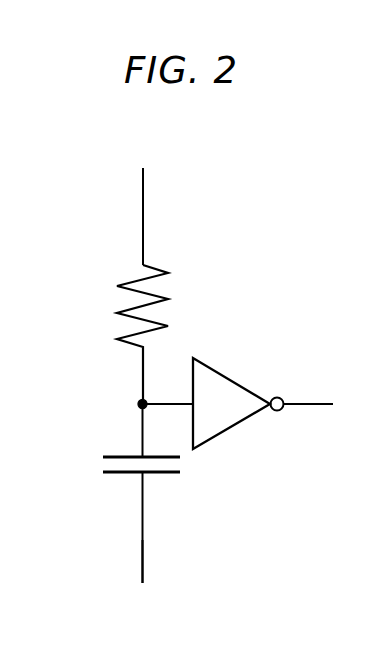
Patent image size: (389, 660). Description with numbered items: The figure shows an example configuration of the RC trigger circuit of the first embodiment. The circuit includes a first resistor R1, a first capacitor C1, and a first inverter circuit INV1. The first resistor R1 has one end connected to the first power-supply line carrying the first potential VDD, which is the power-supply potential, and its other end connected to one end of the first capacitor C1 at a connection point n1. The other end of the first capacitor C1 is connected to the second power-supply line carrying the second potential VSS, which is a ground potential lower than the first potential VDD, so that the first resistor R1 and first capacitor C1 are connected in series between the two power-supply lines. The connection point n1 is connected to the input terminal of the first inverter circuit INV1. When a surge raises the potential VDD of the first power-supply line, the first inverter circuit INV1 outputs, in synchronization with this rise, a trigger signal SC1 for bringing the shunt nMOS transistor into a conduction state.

The first potential VDD is at (115, 193).
The first resistor R1 is at (109, 334).
The connection point n1 is at (145, 400).
The first inverter circuit INV1 is at (238, 390).
The trigger signal SC1 is at (308, 433).
The first capacitor C1 is at (115, 493).
The second potential VSS is at (123, 586).